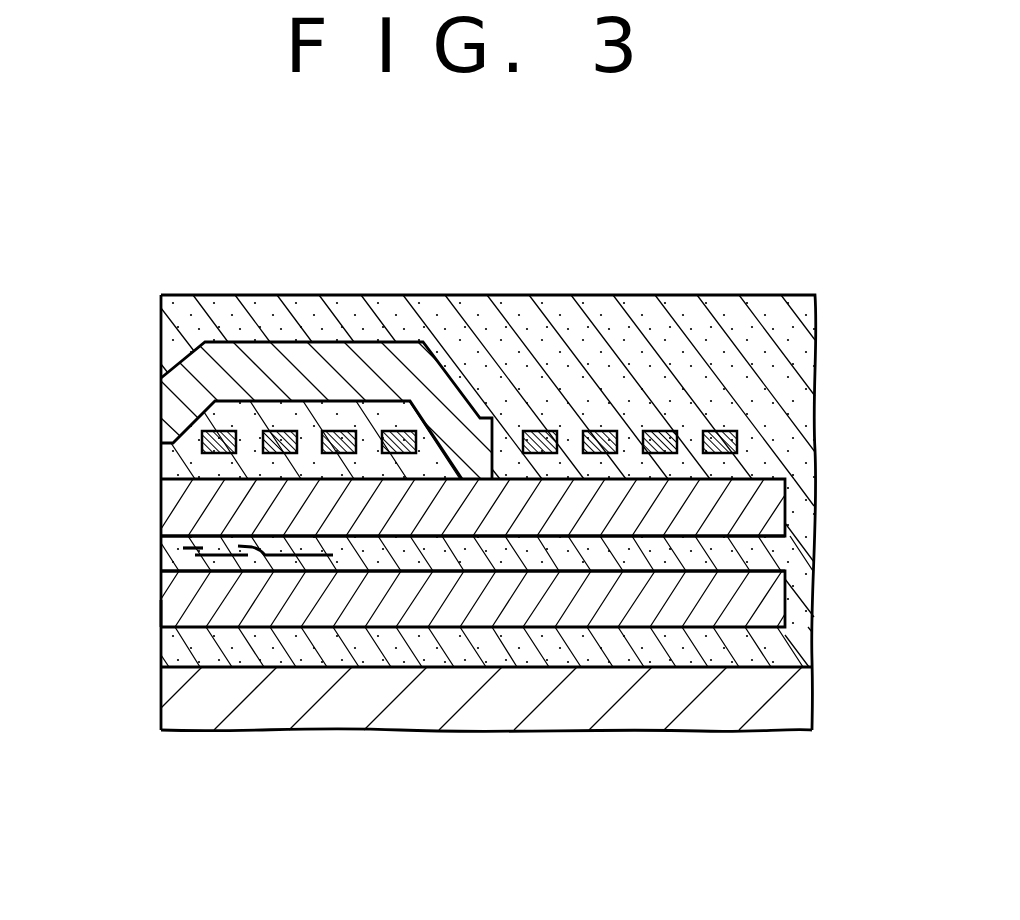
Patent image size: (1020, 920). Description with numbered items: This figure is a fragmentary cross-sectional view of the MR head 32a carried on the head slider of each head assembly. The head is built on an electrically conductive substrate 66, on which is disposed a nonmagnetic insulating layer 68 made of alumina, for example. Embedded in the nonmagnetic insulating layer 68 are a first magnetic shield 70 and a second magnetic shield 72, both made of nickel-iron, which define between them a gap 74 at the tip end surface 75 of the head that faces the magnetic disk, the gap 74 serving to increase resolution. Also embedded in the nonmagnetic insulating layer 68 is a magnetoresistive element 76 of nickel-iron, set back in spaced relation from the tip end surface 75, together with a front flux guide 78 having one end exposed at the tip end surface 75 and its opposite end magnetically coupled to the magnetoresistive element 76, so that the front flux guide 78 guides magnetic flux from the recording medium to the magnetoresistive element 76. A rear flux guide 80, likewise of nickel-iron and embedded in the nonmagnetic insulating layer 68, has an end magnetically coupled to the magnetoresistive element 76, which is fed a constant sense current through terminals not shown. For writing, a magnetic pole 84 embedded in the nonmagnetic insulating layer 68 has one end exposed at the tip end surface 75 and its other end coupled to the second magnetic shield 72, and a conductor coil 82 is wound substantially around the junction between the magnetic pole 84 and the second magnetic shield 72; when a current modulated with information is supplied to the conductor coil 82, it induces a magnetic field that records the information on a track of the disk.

The MR head 32a is at (704, 292).
The magnetic pole 84 is at (345, 342).
The conductor coil 82 is at (279, 437).
The second magnetic shield 72 is at (772, 512).
The first magnetic shield 70 is at (785, 598).
The nonmagnetic insulating layer 68 is at (803, 640).
The electrically conductive substrate 66 is at (475, 720).
The gap 74 is at (155, 536).
The rear flux guide 80 is at (185, 548).
The front flux guide 78 is at (195, 570).
The magnetoresistive element 76 is at (190, 568).
The tip end surface 75 is at (162, 613).